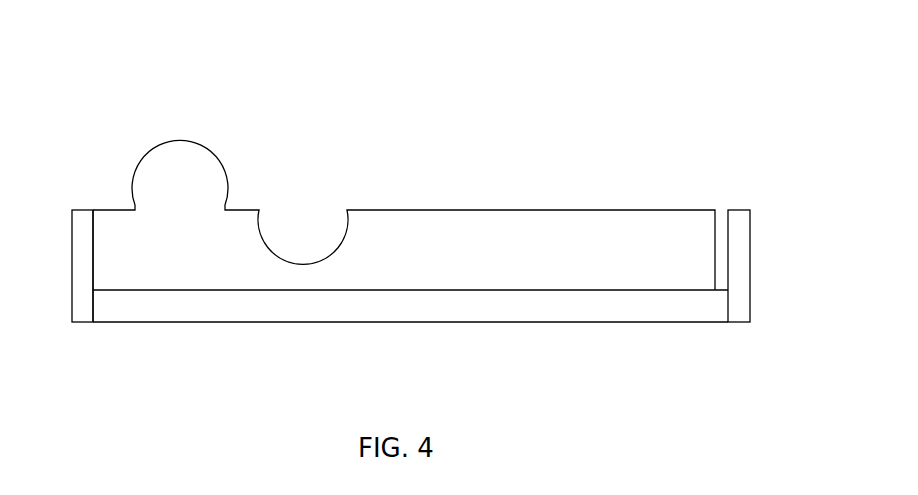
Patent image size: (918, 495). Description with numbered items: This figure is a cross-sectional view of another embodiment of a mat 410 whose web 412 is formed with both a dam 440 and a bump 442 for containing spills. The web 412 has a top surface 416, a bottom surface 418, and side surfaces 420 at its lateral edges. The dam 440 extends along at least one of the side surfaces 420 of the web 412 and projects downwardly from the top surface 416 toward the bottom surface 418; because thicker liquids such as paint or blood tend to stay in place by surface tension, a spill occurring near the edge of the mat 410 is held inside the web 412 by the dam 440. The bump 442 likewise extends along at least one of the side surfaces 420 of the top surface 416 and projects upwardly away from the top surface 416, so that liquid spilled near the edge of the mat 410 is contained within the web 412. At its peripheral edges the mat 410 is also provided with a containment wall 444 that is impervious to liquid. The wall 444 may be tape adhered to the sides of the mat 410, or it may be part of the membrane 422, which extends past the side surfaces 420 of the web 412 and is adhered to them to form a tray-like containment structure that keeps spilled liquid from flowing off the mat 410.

The mat 410 is at (457, 118).
The web 412 is at (697, 245).
The top surface 416 is at (647, 210).
The bottom surface 418 is at (702, 290).
The side surface 420 is at (93, 228).
The membrane 422 is at (613, 302).
The dam 440 is at (303, 223).
The bump 442 is at (183, 193).
The containment wall 444 is at (82, 303).